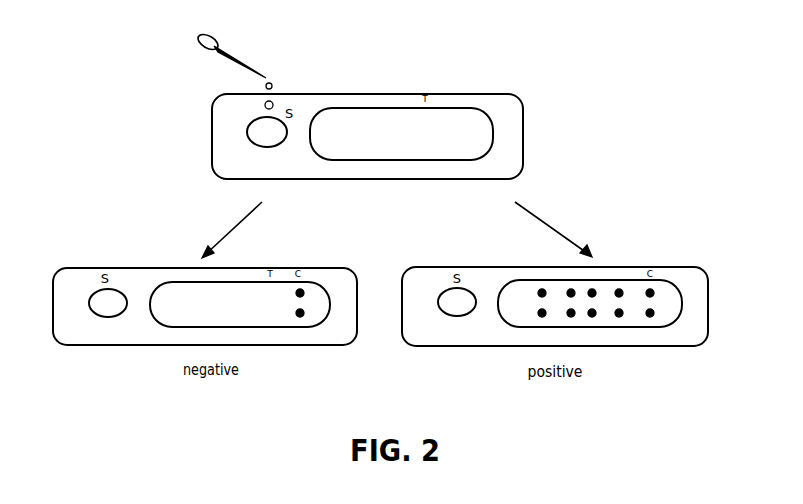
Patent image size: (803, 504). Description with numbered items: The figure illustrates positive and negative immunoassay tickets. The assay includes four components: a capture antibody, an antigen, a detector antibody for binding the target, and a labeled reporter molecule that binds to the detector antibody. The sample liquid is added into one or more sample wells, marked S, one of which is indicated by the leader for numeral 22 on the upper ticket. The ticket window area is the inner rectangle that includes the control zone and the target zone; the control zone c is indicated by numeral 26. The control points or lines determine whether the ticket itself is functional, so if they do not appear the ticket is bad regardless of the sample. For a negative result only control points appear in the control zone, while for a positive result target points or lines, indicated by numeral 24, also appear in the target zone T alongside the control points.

The sample well 22 is at (268, 128).
The test lines 24 is at (618, 265).
The control line 26 is at (465, 95).